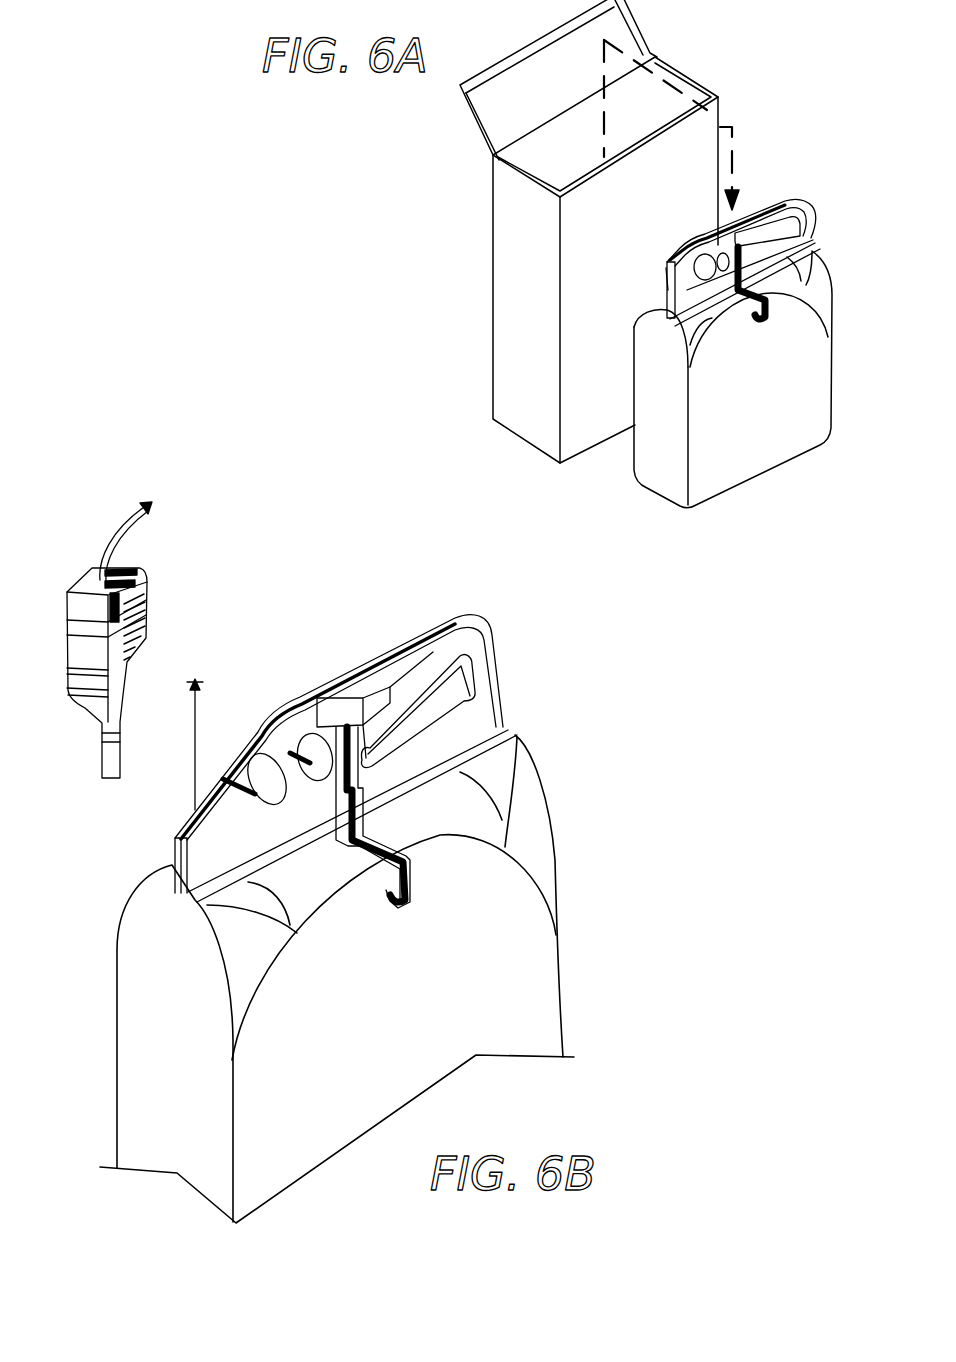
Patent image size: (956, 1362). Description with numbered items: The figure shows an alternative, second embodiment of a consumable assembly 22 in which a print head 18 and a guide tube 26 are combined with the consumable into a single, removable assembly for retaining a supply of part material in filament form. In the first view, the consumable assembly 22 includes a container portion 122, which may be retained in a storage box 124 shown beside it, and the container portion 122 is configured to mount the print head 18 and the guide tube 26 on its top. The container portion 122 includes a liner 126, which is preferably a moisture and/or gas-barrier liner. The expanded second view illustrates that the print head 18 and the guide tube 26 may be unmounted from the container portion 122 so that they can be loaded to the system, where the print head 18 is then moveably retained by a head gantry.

In FIG. 6A, the print head 18 is at (668, 247).
In FIG. 6B, the print head 18 is at (142, 585).
In FIG. 6A, the consumable assembly 22 is at (405, 246).
In FIG. 6A, the guide tube 26 is at (810, 210).
In FIG. 6B, the guide tube 26 is at (198, 712).
In FIG. 6A, the container portion 122 is at (655, 470).
In FIG. 6B, the container portion 122 is at (570, 893).
In FIG. 6A, the storage box 124 is at (507, 343).
In FIG. 6A, the liner 126 is at (733, 470).
In FIG. 6B, the liner 126 is at (340, 1000).